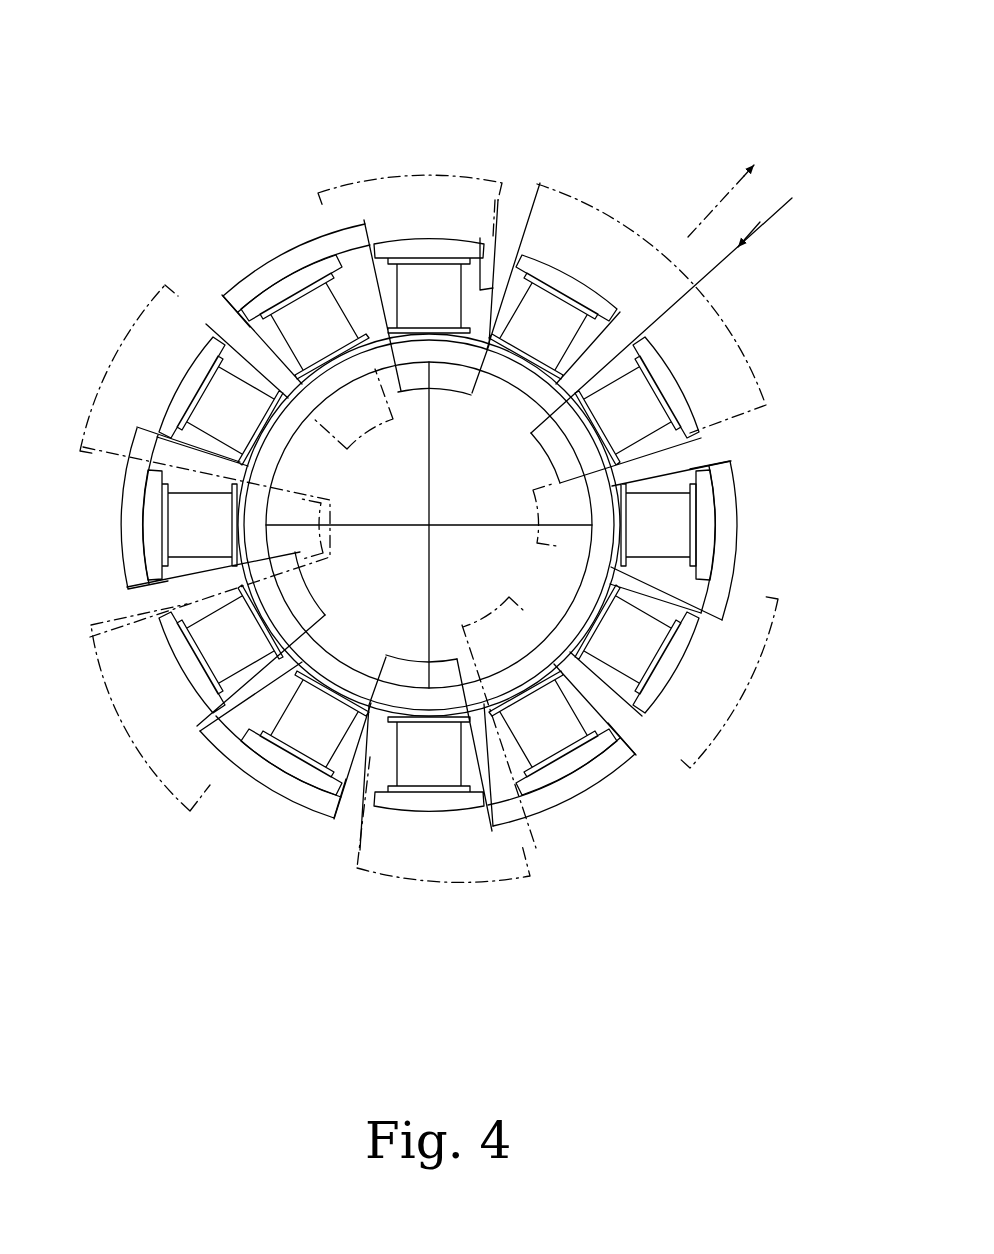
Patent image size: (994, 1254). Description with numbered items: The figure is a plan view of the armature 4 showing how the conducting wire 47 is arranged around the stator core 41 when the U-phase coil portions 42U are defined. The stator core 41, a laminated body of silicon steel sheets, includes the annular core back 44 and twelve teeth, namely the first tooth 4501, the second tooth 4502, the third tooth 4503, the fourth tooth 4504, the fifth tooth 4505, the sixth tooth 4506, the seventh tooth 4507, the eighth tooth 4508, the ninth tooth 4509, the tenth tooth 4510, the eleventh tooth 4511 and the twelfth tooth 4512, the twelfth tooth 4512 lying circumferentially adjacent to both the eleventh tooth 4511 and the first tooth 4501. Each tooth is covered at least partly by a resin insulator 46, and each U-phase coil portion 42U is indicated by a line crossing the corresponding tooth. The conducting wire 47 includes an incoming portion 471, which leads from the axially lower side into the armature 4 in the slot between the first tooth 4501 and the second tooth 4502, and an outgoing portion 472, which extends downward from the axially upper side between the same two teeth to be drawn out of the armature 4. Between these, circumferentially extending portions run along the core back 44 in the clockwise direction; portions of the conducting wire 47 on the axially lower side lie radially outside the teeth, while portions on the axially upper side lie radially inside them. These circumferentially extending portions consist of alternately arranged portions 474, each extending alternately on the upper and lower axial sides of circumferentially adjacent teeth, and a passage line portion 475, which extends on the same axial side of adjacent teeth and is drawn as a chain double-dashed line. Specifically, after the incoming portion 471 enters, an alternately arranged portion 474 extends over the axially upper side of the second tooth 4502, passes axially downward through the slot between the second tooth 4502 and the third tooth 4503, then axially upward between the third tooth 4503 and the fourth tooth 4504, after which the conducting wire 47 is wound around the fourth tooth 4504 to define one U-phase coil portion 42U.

The armature 4 is at (145, 118).
The stator core 41 is at (330, 165).
The U-phase coil portion 42U is at (495, 253).
The annular core back 44 is at (515, 370).
The insulator 46 is at (693, 533).
The conducting wire 47 is at (793, 198).
The incoming portion 471 is at (748, 243).
The outgoing portion 472 is at (738, 185).
The alternately arranged portion 474 is at (258, 262).
The passage line portion 475 is at (548, 195).
The first tooth 4501 is at (563, 280).
The second tooth 4502 is at (655, 395).
The third tooth 4503 is at (737, 491).
The fourth tooth 4504 is at (660, 645).
The fifth tooth 4505 is at (585, 770).
The sixth tooth 4506 is at (465, 822).
The seventh tooth 4507 is at (297, 765).
The eighth tooth 4508 is at (190, 663).
The ninth tooth 4509 is at (153, 522).
The tenth tooth 4510 is at (188, 390).
The eleventh tooth 4511 is at (293, 280).
The twelfth tooth 4512 is at (428, 285).